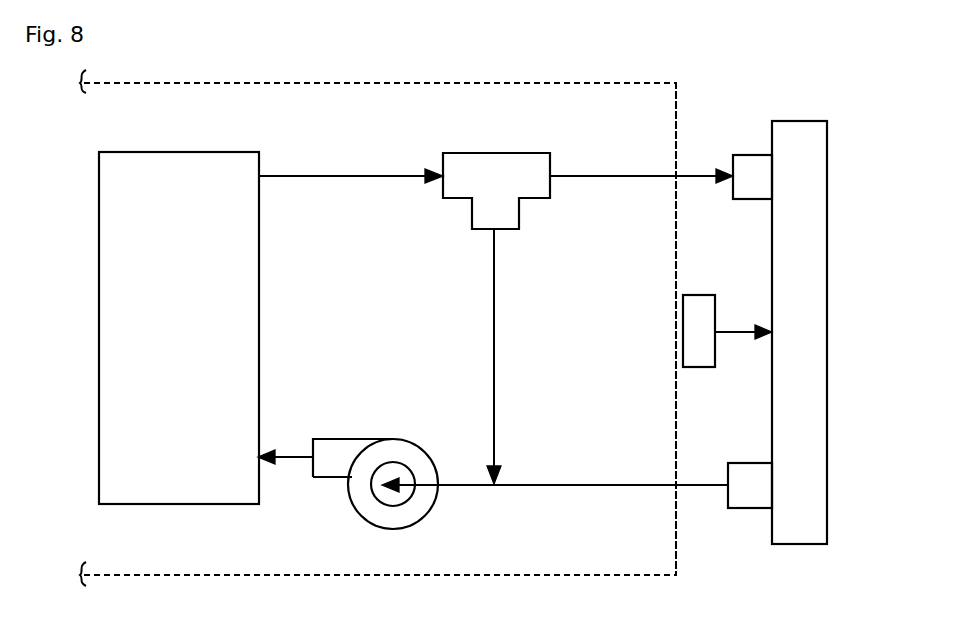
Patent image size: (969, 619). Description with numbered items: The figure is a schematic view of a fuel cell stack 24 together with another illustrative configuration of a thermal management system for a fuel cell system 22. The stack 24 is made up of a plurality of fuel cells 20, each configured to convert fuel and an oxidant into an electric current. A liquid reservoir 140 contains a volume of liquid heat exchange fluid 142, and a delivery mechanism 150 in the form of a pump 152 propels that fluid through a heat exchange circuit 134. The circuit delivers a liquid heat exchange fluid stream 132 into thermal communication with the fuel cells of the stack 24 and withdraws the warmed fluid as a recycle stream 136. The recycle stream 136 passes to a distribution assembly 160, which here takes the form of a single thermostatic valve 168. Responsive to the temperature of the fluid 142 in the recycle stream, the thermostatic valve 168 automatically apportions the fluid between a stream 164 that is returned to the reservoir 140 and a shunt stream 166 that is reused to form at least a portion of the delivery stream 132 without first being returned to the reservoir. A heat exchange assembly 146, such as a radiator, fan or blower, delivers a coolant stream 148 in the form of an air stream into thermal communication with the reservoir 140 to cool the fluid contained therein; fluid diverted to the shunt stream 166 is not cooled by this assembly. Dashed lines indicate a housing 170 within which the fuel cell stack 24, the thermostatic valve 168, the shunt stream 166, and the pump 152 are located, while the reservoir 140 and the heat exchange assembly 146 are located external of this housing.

The fuel cell system 22 is at (58, 155).
The fuel cell stack 24 is at (147, 150).
The fuel cells 20 is at (260, 253).
The liquid heat exchange fluid 142 is at (300, 173).
The recycle stream 136 is at (333, 178).
The heat exchange circuit 134 is at (373, 192).
The distribution assembly 160 is at (476, 148).
The thermostatic valve 168 is at (513, 152).
The stream returned to reservoir 164 is at (600, 179).
The shunt stream 166 is at (496, 330).
The housing 170 is at (678, 150).
The liquid reservoir 140 is at (828, 165).
The heat exchange assembly 146 is at (700, 294).
The coolant stream 148 is at (733, 331).
The liquid heat exchange fluid stream 132 is at (452, 484).
The delivery mechanism 150 is at (384, 430).
The pump 152 is at (428, 455).